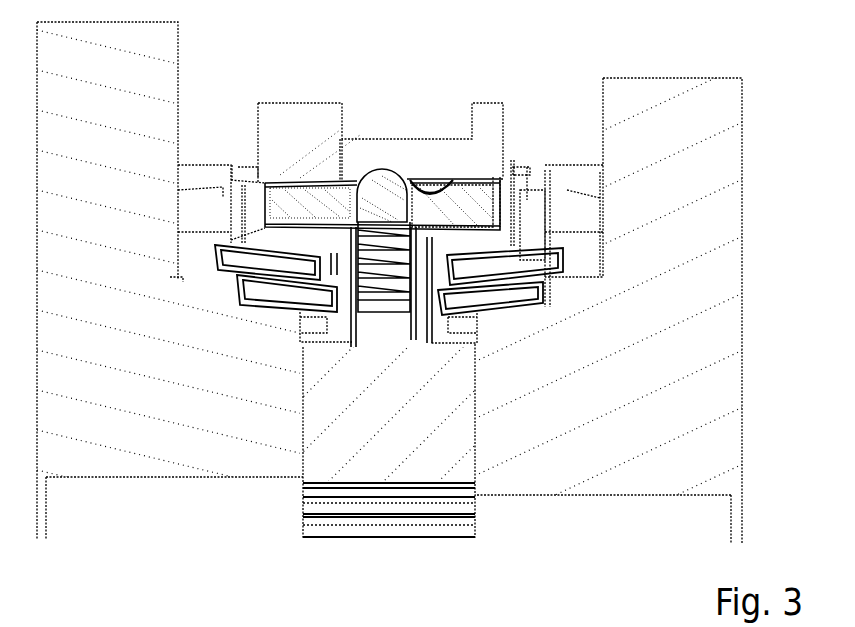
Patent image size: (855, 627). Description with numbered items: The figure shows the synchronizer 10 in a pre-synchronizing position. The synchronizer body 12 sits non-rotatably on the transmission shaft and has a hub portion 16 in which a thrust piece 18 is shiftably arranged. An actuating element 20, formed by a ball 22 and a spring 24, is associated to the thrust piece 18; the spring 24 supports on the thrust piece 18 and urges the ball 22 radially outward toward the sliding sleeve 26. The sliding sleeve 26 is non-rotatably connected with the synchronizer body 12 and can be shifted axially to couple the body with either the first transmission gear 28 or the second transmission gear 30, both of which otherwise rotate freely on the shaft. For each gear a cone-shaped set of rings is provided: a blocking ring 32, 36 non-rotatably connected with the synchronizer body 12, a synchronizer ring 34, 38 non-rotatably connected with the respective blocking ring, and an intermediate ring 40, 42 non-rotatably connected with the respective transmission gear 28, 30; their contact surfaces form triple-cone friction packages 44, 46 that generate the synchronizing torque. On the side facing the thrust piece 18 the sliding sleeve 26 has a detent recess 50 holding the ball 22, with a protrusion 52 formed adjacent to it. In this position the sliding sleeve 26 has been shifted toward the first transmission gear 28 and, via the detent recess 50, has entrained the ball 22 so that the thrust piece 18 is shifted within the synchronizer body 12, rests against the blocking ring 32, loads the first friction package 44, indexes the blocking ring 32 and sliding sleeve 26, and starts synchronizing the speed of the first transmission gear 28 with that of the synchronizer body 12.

The synchronizer 10 is at (477, 90).
The synchronizer body 12 is at (453, 478).
The hub portion 16 is at (380, 320).
The thrust piece 18 is at (478, 202).
The actuating element 20 is at (408, 166).
The ball 22 is at (388, 188).
The spring 24 is at (365, 290).
The sliding sleeve 26 is at (290, 136).
The first transmission gear 28 is at (159, 42).
The second transmission gear 30 is at (675, 105).
The blocking ring 32 is at (257, 194).
The synchronizer ring 34 is at (251, 295).
The blocking ring 36 is at (527, 210).
The synchronizer ring 38 is at (502, 295).
The intermediate ring 40 is at (232, 260).
The intermediate ring 42 is at (533, 257).
The friction package 44 is at (286, 326).
The friction package 46 is at (492, 321).
The detent recess 50 is at (372, 168).
The protrusion 52 is at (443, 188).